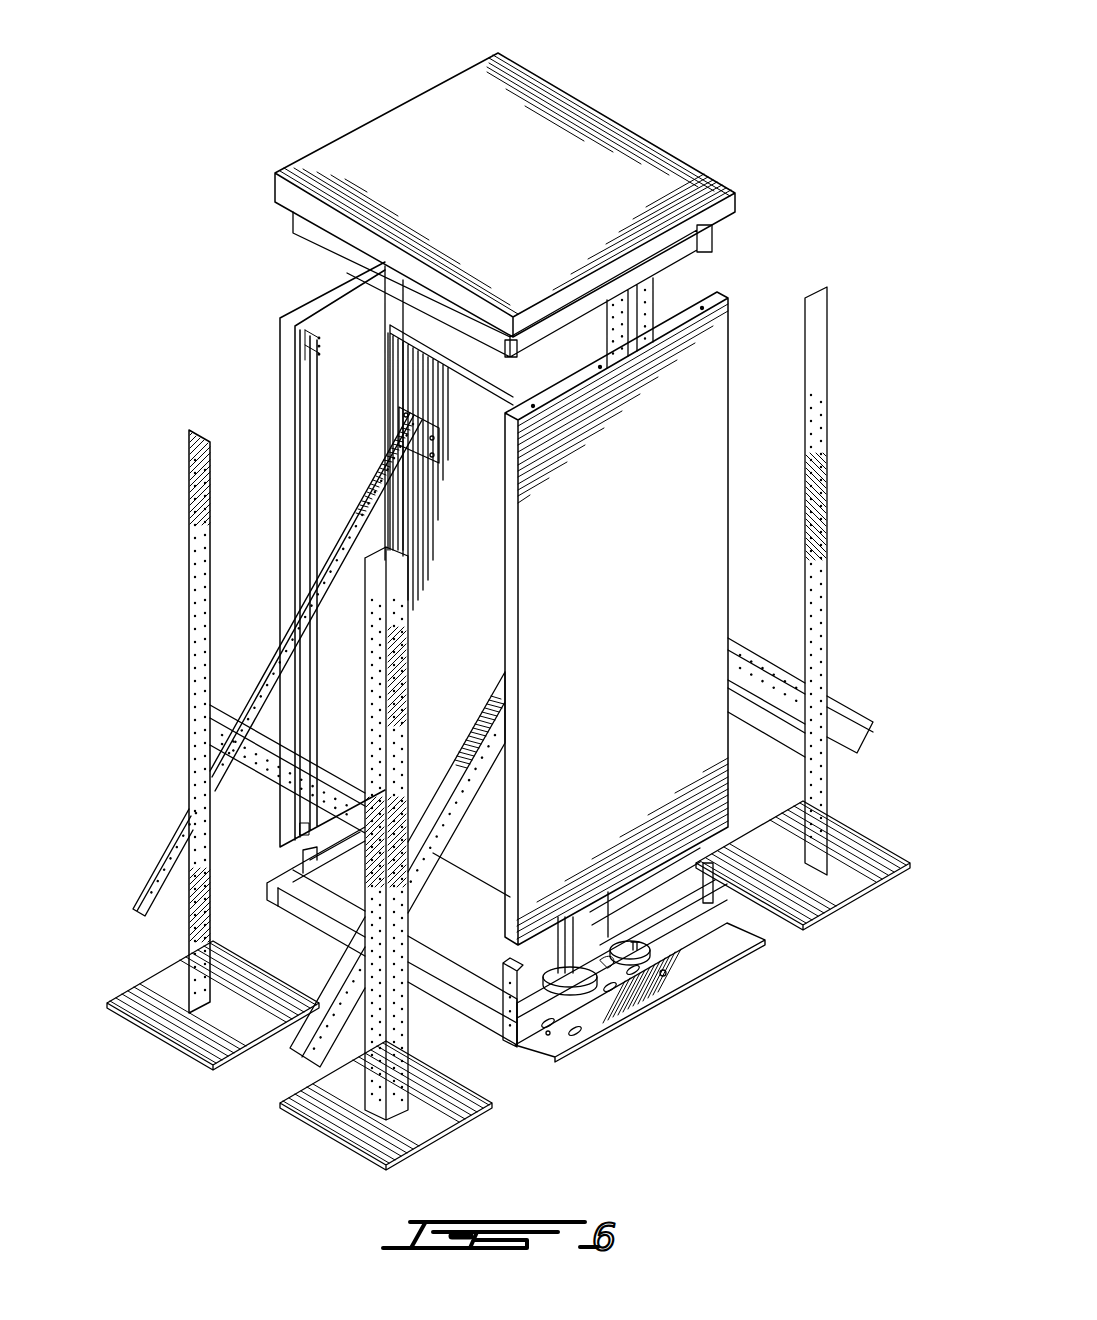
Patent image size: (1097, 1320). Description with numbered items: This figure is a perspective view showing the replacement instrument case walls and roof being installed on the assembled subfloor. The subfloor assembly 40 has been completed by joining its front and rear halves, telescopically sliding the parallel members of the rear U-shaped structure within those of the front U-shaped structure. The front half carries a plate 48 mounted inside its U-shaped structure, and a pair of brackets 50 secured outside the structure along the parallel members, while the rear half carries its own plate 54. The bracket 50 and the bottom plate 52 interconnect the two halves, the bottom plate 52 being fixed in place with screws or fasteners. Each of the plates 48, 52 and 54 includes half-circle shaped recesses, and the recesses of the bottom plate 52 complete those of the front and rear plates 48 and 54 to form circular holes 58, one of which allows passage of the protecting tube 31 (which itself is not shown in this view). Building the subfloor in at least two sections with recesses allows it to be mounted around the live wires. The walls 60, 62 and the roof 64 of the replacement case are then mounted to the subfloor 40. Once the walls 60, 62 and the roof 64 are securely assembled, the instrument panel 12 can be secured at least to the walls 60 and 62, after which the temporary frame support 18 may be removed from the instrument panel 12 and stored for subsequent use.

The instrument panel 12 is at (418, 491).
The temporary frame support 18 is at (162, 443).
The protecting tube 31 is at (552, 980).
The subfloor assembly 40 is at (571, 972).
The plate 48 is at (527, 980).
The bracket 50 is at (600, 1022).
The bottom plate 52 is at (473, 910).
The plate 54 is at (652, 908).
The circular hole 58 is at (631, 955).
The wall 60 is at (320, 298).
The wall 62 is at (716, 343).
The roof 64 is at (645, 177).